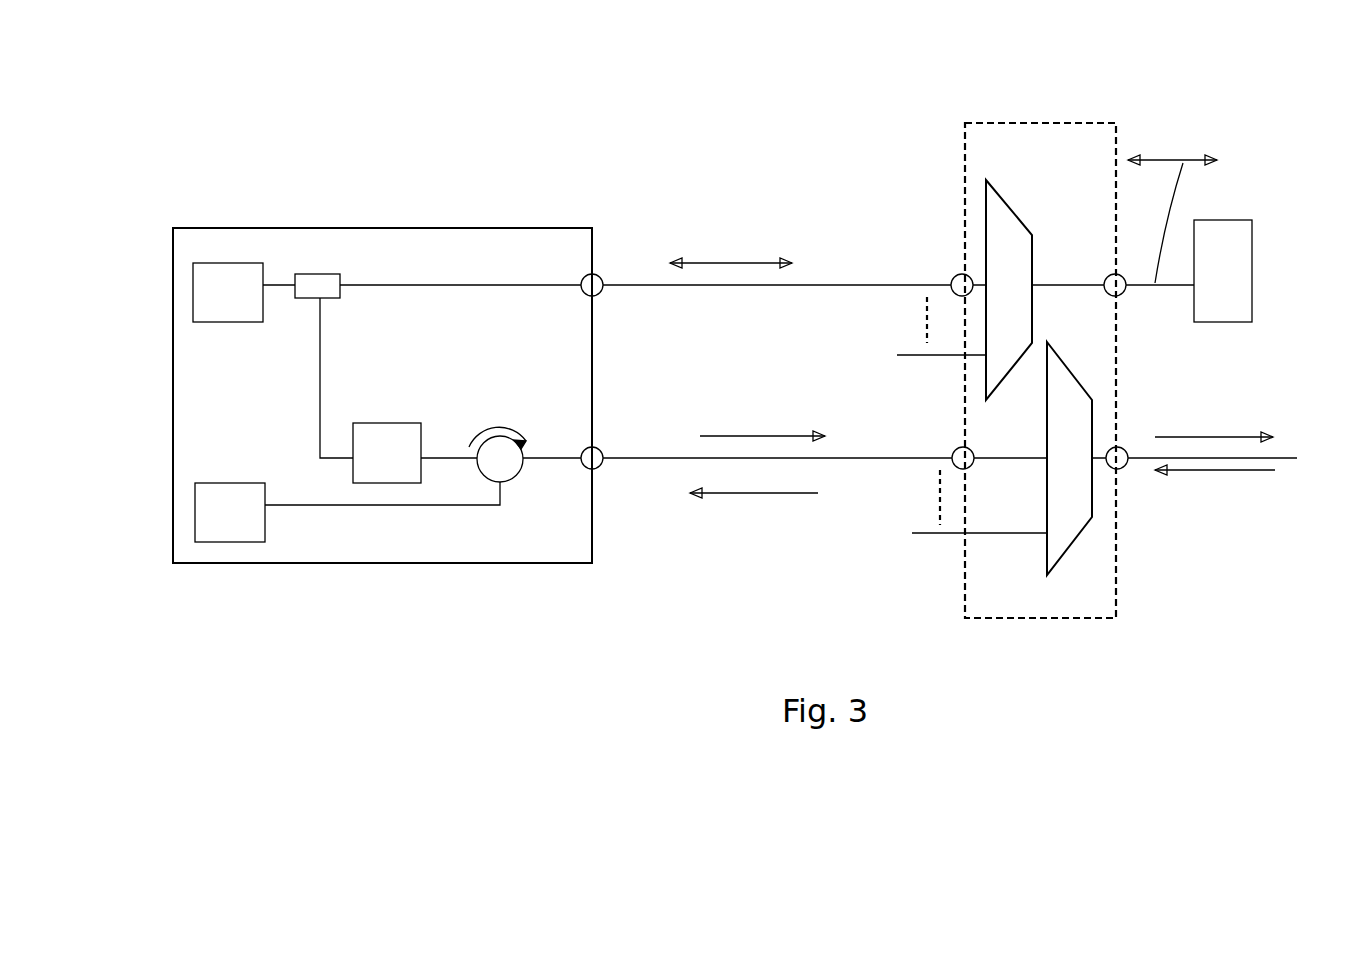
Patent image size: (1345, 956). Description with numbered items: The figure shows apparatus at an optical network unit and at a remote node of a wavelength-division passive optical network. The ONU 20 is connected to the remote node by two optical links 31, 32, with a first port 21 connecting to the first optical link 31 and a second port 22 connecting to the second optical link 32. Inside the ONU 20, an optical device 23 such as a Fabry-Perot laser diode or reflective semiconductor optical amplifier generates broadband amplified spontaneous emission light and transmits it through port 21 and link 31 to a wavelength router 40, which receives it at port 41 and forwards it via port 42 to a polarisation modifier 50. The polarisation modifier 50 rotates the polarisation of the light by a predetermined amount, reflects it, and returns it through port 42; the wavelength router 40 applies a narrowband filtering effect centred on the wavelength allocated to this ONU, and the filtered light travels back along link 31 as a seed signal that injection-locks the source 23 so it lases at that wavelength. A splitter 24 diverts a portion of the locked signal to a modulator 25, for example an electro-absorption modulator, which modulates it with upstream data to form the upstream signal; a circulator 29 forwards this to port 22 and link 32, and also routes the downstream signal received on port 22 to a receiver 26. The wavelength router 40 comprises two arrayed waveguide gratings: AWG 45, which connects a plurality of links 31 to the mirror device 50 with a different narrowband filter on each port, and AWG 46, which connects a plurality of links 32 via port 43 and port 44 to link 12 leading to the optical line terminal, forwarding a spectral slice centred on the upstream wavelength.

The link 12 is at (1287, 445).
The ONU 20 is at (293, 228).
The first port 21 is at (597, 275).
The second port 22 is at (597, 447).
The optical device 23 is at (193, 292).
The splitter 24 is at (328, 274).
The modulator 25 is at (392, 423).
The receiver 26 is at (223, 483).
The circulator 29 is at (507, 480).
The first optical link 31 is at (646, 285).
The second optical link 32 is at (661, 458).
The wavelength router 40 is at (983, 122).
The port 41 is at (957, 275).
The port 42 is at (1125, 275).
The port 43 is at (955, 450).
The port 44 is at (1125, 445).
The AWG 45 is at (985, 235).
The AWG 46 is at (1095, 530).
The polarisation modifier 50 is at (1252, 265).